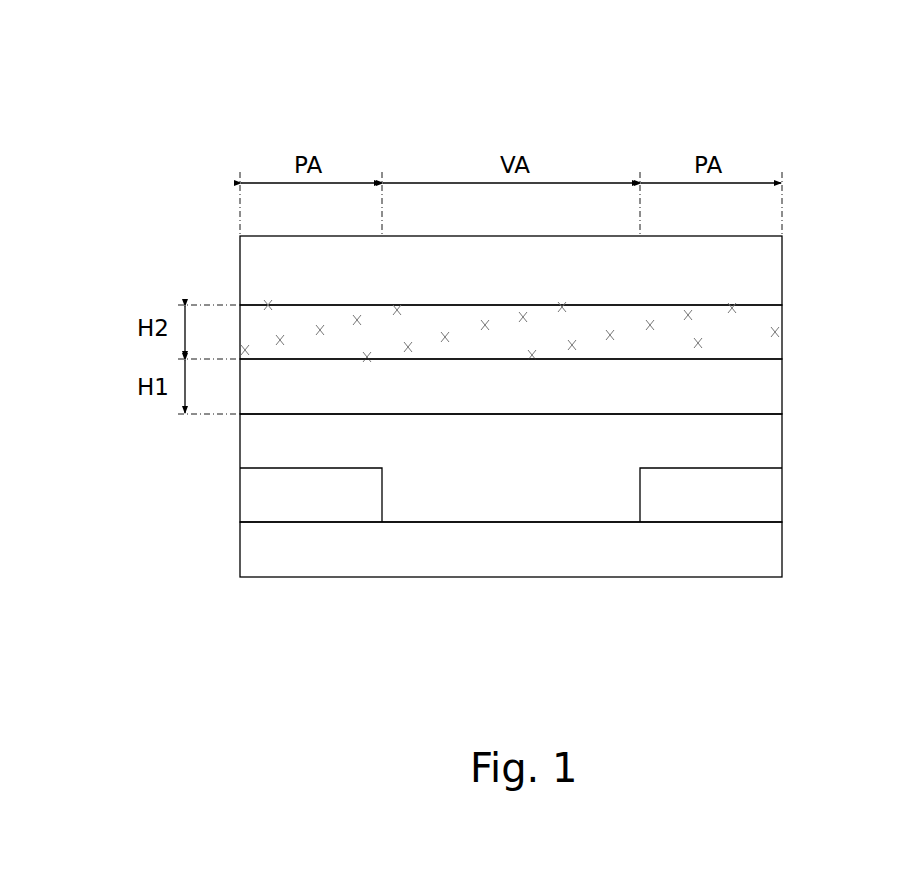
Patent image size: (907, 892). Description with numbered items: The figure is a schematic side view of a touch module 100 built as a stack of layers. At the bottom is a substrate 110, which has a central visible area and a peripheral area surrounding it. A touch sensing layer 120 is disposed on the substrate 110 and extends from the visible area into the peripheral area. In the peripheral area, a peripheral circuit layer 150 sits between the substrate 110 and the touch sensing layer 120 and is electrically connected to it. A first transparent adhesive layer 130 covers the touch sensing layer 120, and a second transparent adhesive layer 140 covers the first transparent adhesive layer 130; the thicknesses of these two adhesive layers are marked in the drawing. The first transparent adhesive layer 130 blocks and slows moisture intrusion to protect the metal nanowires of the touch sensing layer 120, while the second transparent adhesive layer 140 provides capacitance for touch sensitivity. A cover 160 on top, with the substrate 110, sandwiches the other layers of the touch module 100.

The touch module 100 is at (124, 83).
The substrate 110 is at (782, 548).
The touch sensing layer 120 is at (782, 438).
The first transparent adhesive layer 130 is at (782, 383).
The second transparent adhesive layer 140 is at (782, 328).
The peripheral circuit layer 150 is at (782, 493).
The cover 160 is at (782, 268).